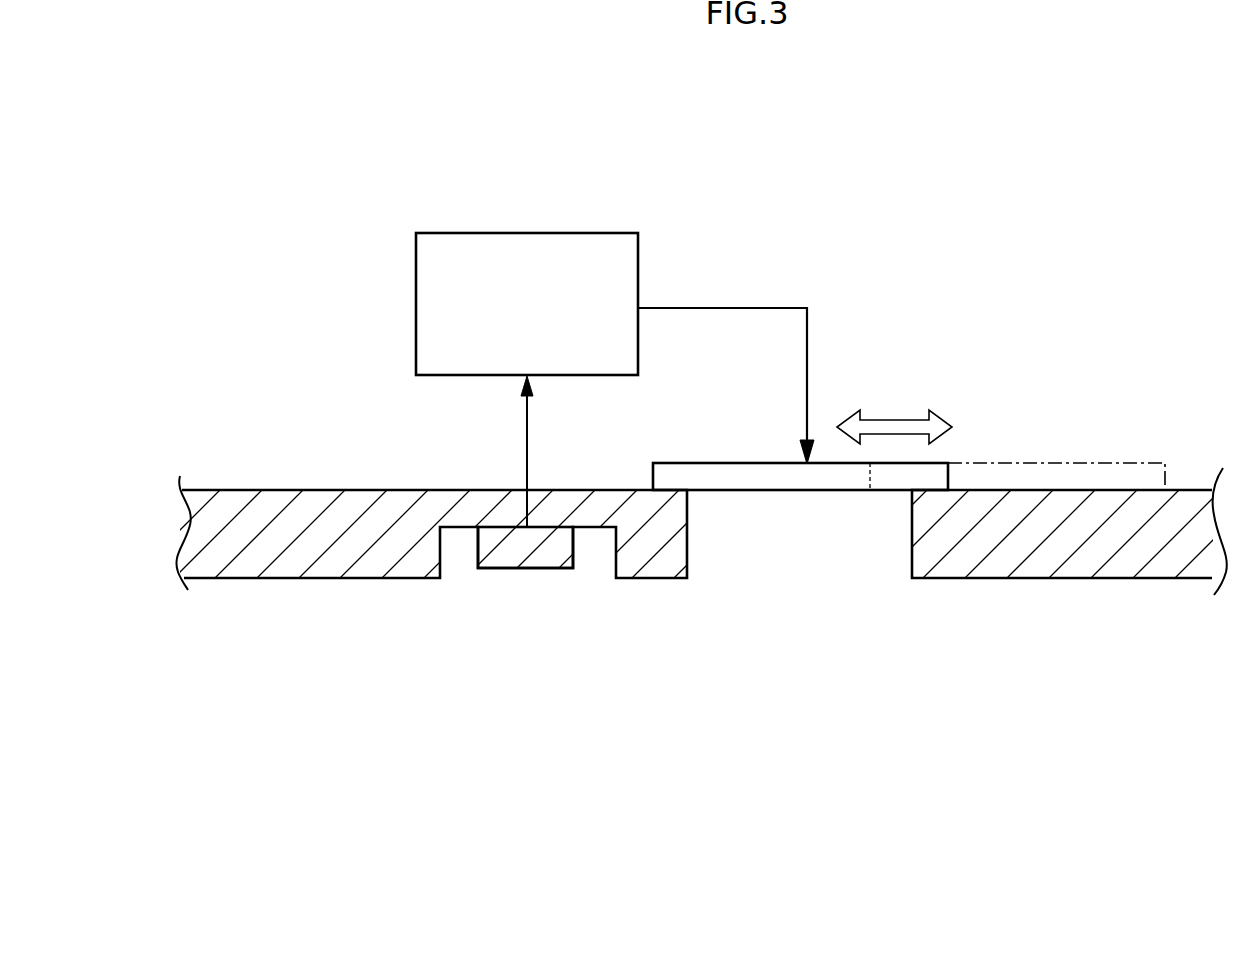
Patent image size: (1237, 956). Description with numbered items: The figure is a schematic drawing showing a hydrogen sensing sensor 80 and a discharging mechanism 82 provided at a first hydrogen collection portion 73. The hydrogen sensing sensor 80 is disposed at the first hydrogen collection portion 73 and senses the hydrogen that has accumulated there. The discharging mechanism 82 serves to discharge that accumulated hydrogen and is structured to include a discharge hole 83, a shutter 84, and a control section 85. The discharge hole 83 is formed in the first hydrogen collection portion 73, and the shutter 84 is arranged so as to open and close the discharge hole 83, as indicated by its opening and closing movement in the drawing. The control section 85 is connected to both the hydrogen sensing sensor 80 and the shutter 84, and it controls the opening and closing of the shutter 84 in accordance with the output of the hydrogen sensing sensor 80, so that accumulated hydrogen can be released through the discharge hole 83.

The first hydrogen collection portion 73 is at (663, 616).
The hydrogen sensing sensor 80 is at (518, 569).
The discharging mechanism 82 is at (803, 206).
The discharge hole 83 is at (817, 552).
The shutter 84 is at (722, 463).
The control section 85 is at (545, 233).